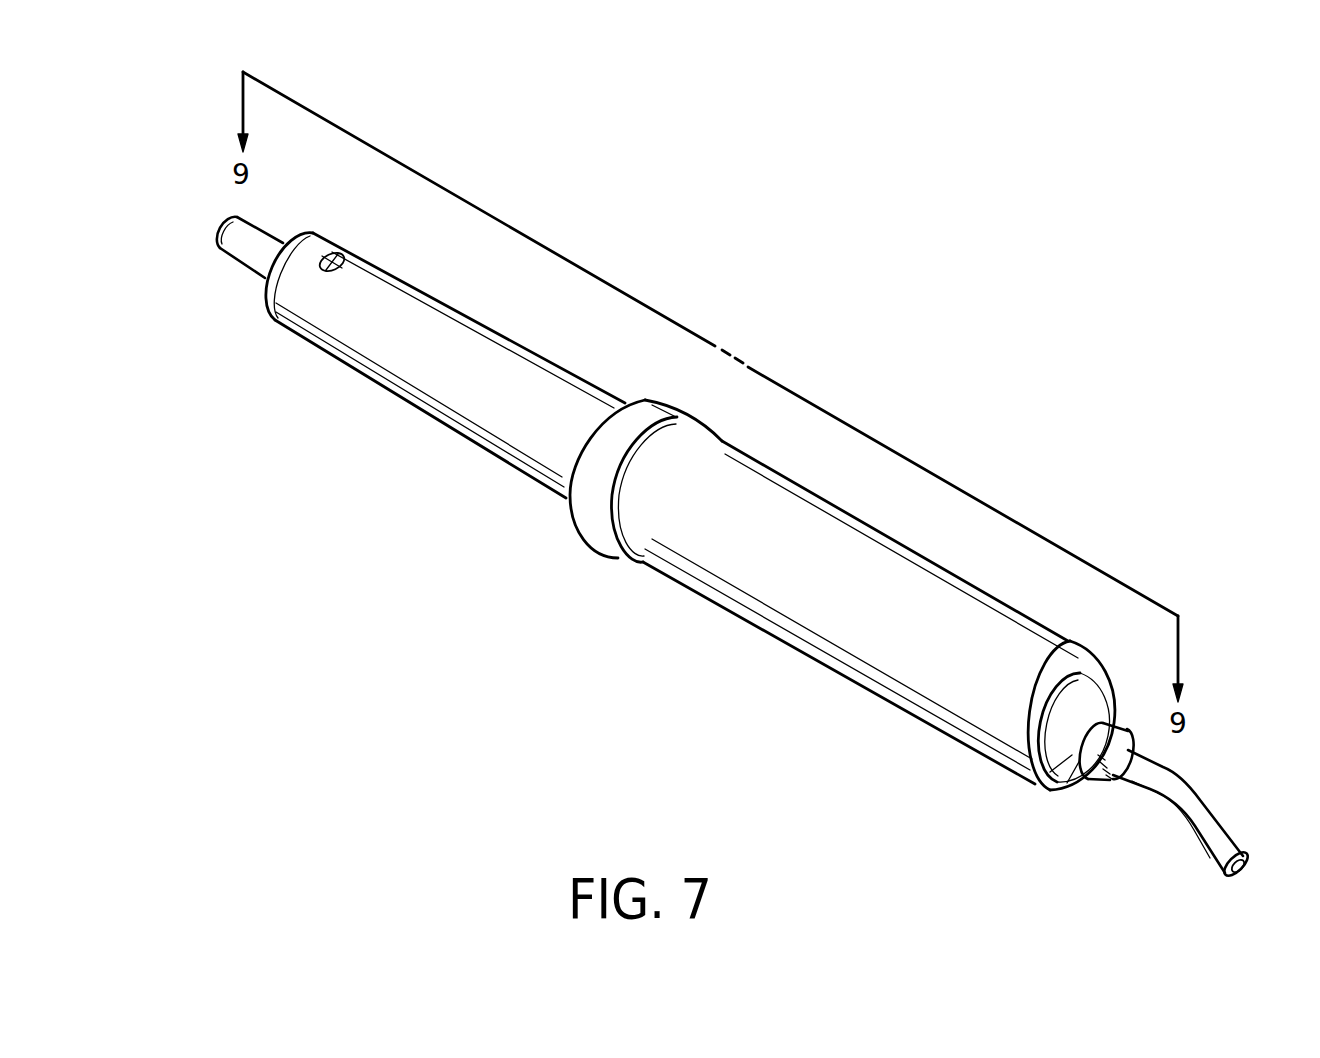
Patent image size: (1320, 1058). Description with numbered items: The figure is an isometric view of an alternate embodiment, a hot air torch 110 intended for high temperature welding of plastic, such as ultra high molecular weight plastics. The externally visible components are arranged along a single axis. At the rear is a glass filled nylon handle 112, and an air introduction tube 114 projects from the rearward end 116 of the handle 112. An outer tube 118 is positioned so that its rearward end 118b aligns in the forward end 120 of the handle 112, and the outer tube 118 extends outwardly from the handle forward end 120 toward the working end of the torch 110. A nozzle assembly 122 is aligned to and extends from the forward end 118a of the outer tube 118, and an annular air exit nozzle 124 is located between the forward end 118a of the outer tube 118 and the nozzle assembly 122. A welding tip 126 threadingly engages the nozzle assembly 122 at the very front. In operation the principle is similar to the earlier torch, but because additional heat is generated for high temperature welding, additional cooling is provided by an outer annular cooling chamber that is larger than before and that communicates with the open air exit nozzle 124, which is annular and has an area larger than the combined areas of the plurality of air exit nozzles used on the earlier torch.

The torch 110 is at (912, 230).
The handle 112 is at (446, 359).
The air introduction tube 114 is at (250, 245).
The rearward end 116 is at (312, 248).
The outer tube 118 is at (860, 604).
The forward end 118a is at (1000, 740).
The rearward end 118b is at (673, 456).
The forward end 120 is at (598, 535).
The nozzle assembly 122 is at (1074, 787).
The annular air exit nozzle 124 is at (1032, 778).
The welding tip 126 is at (1195, 812).